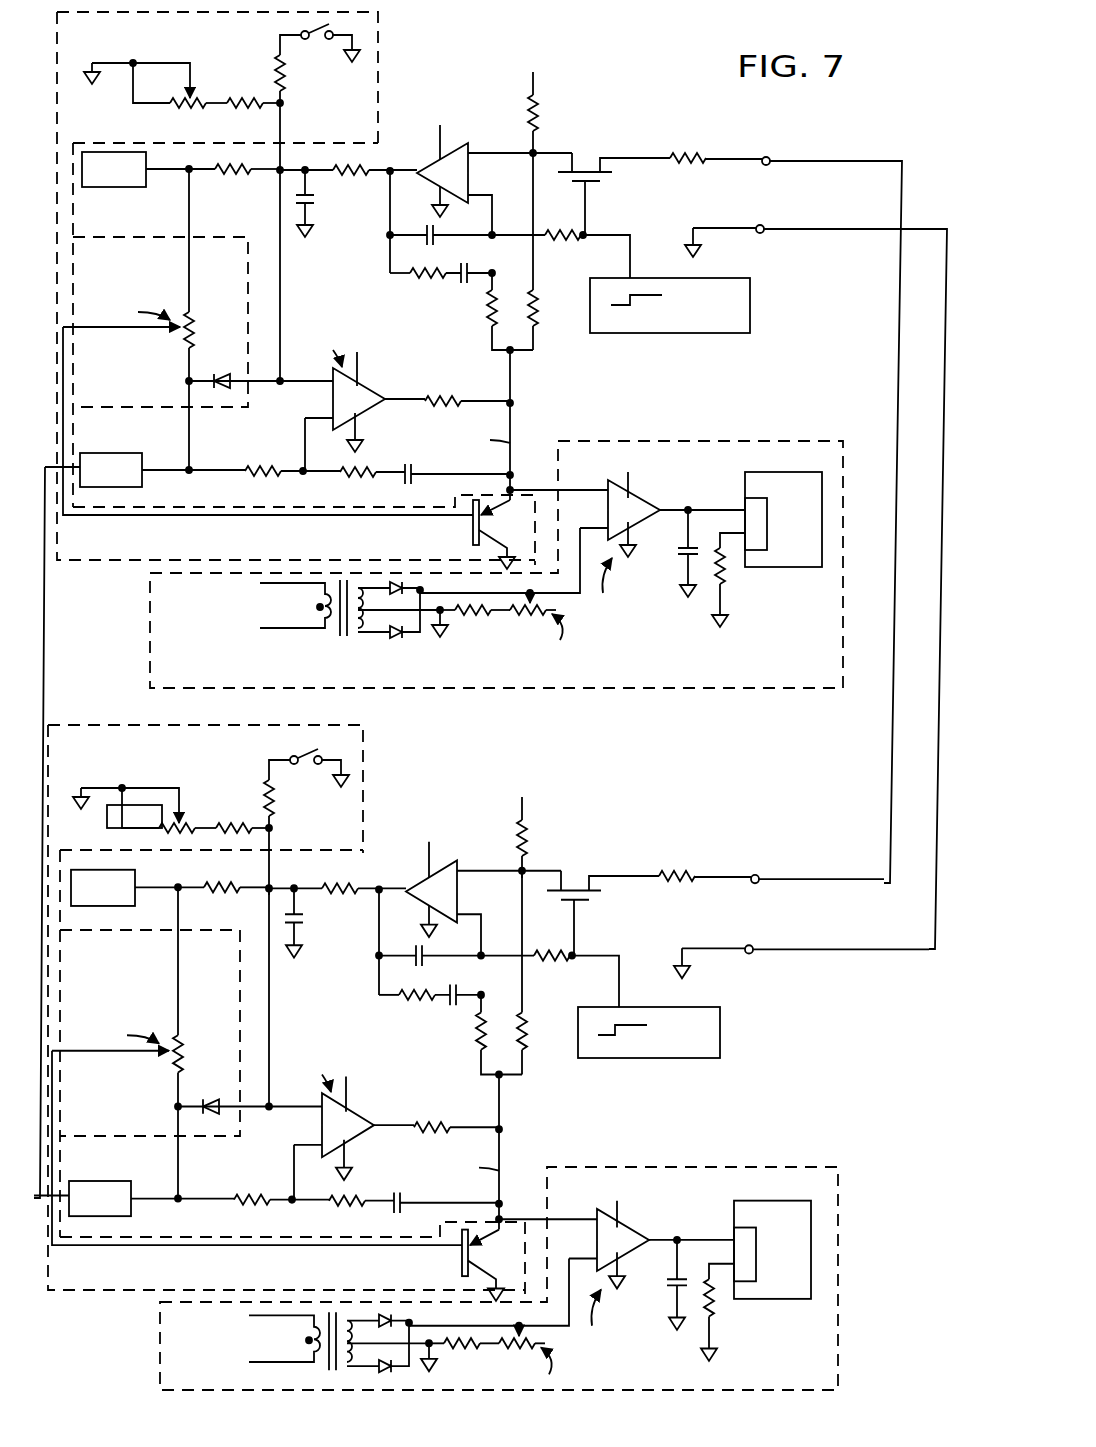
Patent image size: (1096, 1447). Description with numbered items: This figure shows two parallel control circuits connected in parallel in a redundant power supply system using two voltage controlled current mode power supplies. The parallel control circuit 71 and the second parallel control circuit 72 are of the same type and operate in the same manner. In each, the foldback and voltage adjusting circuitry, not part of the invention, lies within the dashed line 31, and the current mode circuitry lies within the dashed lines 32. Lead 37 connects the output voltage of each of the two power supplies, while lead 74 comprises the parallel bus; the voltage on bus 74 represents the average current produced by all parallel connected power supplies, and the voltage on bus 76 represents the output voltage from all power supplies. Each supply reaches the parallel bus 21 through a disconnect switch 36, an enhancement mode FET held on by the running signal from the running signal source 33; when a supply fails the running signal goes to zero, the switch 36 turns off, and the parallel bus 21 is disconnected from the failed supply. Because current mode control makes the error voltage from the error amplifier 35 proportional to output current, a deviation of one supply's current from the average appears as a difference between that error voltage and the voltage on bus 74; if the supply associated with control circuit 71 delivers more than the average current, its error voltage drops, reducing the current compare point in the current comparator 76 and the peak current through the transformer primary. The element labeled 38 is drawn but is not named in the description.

The parallel bus 21 is at (770, 157).
The dashed line 31 is at (92, 562).
The dashed lines 32 is at (150, 609).
The running signal source 33 is at (762, 301).
The error amplifier 35 is at (383, 395).
The disconnect switch 36 is at (605, 160).
The lead 37 is at (640, 498).
The TL494 pulse width modulator oscillator 38 is at (745, 480).
The parallel control circuit 71 is at (492, 349).
The second power supply 72 is at (110, 1296).
The parallel bus 74 is at (946, 385).
The bus 76 is at (44, 652).